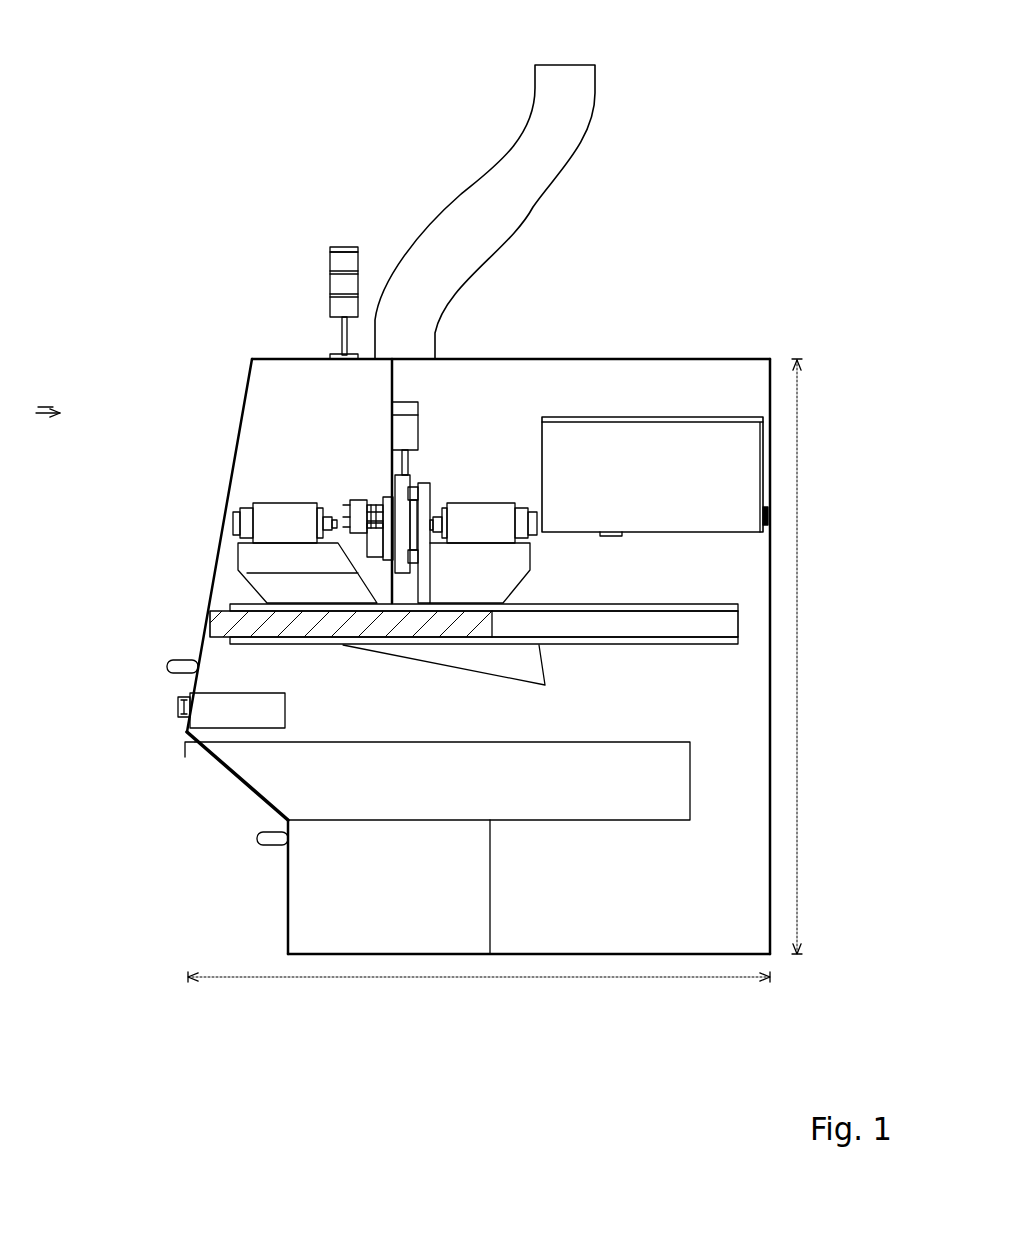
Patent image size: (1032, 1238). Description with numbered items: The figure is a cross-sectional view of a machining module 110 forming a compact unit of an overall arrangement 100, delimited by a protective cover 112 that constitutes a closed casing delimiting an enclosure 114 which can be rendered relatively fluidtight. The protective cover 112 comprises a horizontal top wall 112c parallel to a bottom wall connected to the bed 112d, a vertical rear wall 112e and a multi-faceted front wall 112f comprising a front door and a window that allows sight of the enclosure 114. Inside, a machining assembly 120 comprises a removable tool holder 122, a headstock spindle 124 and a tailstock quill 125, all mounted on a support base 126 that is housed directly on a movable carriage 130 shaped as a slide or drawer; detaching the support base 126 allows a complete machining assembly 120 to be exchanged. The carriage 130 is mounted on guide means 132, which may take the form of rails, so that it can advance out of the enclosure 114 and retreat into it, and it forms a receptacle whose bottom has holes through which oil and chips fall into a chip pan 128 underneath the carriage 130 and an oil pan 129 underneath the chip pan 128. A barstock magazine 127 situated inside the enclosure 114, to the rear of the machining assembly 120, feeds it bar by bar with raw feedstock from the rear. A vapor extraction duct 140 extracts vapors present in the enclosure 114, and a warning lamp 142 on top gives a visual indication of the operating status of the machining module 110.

The machining system 100 is at (782, 135).
The machining module 110 is at (787, 328).
The protective cover 112 is at (680, 358).
The horizontal top wall 112c is at (590, 357).
The bottom wall connected to the bed 112d is at (558, 955).
The vertical rear wall 112e is at (772, 702).
The multi-faceted front wall 112f is at (253, 790).
The enclosure 114 is at (508, 466).
The machining assembly 120 is at (473, 387).
The tool holder 122 is at (362, 510).
The headstock spindle 124 is at (500, 523).
The tailstock quill 125 is at (285, 513).
The support base 126 is at (268, 568).
The barstock magazine 127 is at (728, 463).
The chip pan 128 is at (508, 797).
The oil pan 129 is at (414, 907).
The movable carriage 130 is at (240, 641).
The guide means 132 is at (233, 628).
The vapor extraction duct 140 is at (568, 150).
The warning lamp 142 is at (330, 275).